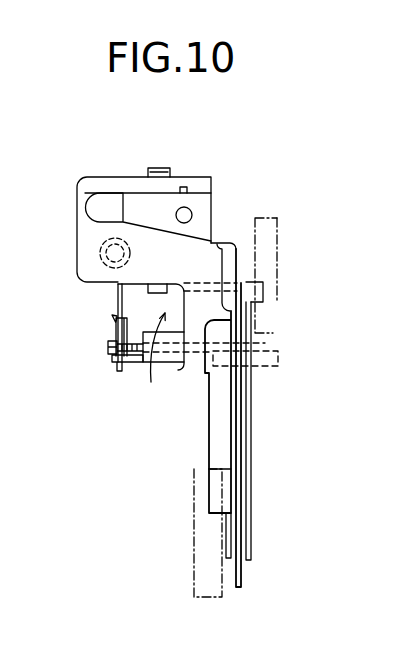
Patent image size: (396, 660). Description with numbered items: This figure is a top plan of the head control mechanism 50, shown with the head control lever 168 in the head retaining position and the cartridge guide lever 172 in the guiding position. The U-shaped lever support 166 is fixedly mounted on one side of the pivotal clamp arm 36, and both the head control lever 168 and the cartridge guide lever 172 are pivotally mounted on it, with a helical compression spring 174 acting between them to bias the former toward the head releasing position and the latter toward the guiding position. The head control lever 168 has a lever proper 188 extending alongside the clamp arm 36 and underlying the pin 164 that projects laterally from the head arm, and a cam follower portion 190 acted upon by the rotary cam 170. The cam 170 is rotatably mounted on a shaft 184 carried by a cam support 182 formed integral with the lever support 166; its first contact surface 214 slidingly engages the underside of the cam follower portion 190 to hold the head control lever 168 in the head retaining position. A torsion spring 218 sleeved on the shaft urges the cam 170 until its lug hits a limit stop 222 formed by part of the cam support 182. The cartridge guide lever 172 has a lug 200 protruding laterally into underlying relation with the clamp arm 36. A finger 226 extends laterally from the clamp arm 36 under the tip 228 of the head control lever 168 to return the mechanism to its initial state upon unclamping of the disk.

The lever support 166 is at (212, 202).
The head control mechanism 50 is at (274, 197).
The clamp arm 36 is at (278, 266).
The helical compression spring 174 is at (98, 242).
The cam support 182 is at (115, 286).
The lug 200 is at (264, 293).
The shaft 184 is at (114, 321).
The cam follower portion 190 is at (197, 348).
The limit stop 222 is at (112, 358).
The pin 164 is at (262, 367).
The torsion spring 218 is at (140, 366).
The first contact surface 214 is at (175, 367).
The lever proper 188 is at (223, 377).
The rotary cam 170 is at (145, 367).
The head control lever 168 is at (210, 417).
The tip 228 is at (209, 486).
The finger 226 is at (193, 521).
The cartridge guide lever 172 is at (229, 563).